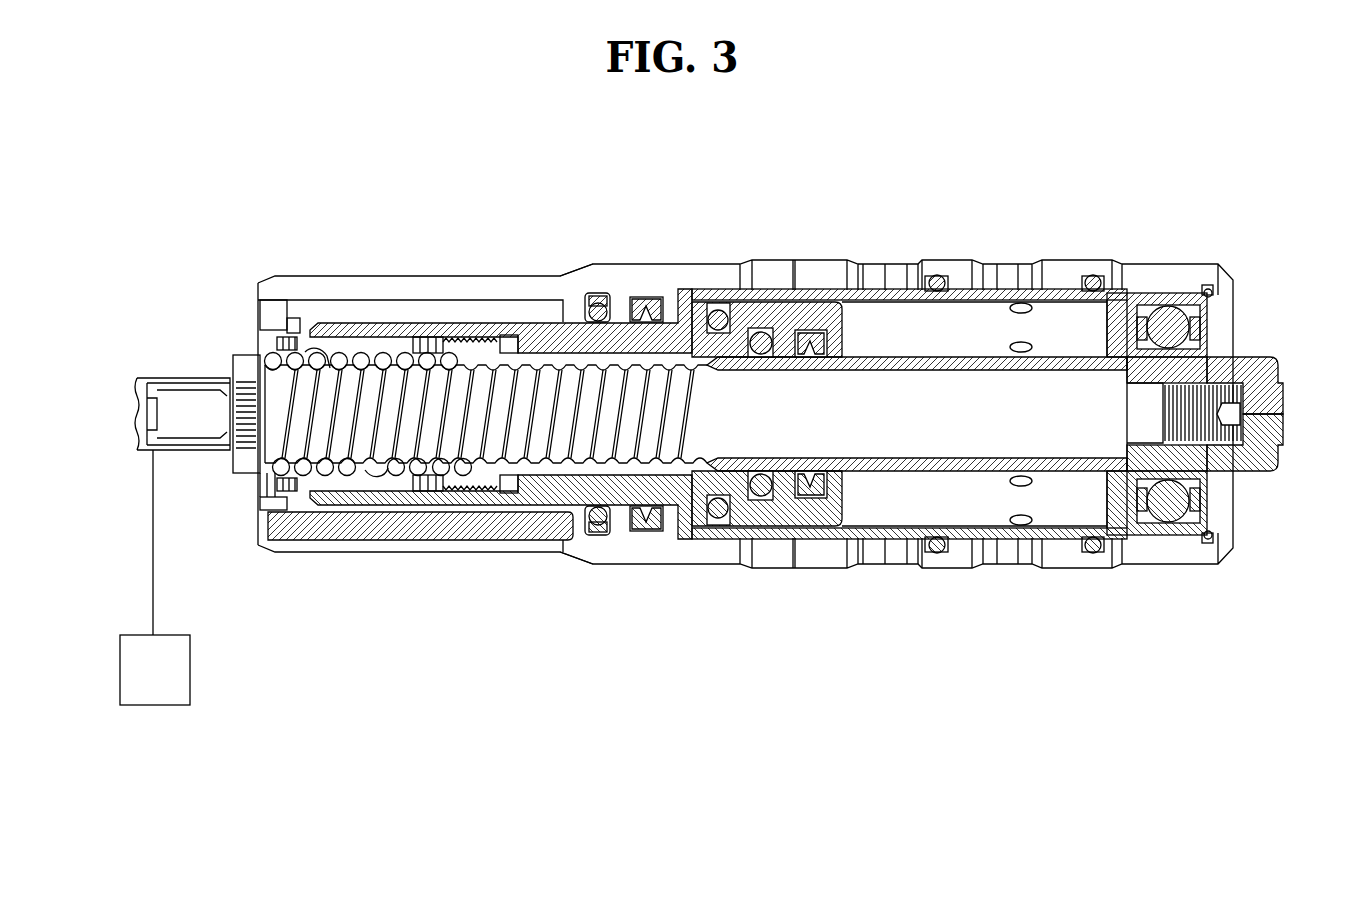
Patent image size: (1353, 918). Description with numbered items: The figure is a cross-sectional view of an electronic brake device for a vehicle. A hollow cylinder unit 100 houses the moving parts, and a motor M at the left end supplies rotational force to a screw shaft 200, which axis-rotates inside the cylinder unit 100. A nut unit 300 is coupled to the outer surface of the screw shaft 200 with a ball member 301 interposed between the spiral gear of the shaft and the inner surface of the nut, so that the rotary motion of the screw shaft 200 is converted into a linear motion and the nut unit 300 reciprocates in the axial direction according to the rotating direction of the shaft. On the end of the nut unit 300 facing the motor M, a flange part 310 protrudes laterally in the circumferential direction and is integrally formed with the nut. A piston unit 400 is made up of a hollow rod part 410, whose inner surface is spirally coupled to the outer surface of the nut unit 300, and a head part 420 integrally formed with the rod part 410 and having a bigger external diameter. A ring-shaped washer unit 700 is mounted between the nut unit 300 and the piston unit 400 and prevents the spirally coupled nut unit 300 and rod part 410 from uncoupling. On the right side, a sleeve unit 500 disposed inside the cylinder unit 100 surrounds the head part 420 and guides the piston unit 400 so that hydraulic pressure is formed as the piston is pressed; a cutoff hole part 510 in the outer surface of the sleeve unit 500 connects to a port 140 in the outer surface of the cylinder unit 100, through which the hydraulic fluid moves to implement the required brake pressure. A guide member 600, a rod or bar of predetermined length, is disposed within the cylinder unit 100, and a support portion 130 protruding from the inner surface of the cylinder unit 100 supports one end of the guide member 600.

The cylinder unit 100 is at (663, 264).
The support portion 130 is at (582, 540).
The port 140 is at (1007, 270).
The screw shaft 200 is at (652, 440).
The nut unit 300 is at (392, 335).
The ball member 301 is at (392, 352).
The flange part 310 is at (275, 317).
The piston unit 400 is at (718, 336).
The rod part 410 is at (485, 322).
The head part 420 is at (909, 359).
The sleeve unit 500 is at (1127, 540).
The cutoff hole part 510 is at (1020, 482).
The guide member 600 is at (345, 527).
The washer unit 700 is at (298, 326).
The motor M is at (190, 668).